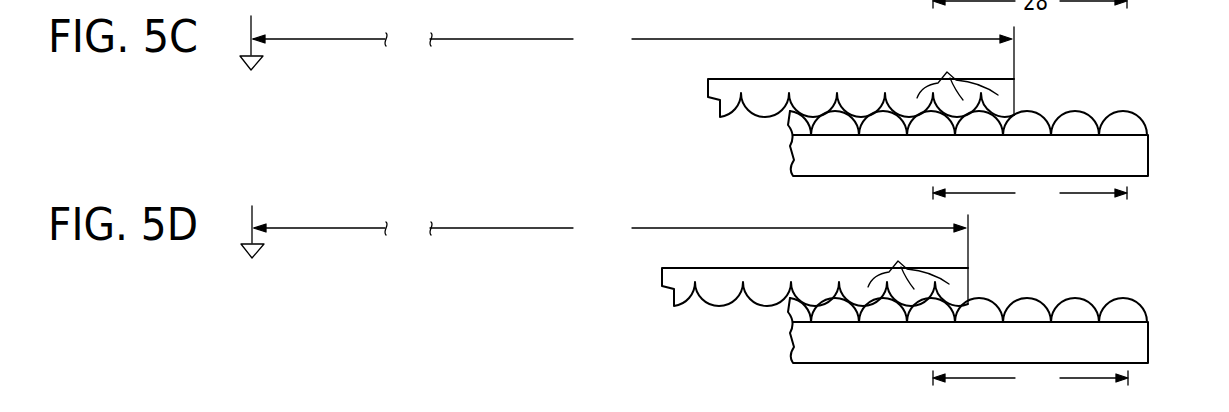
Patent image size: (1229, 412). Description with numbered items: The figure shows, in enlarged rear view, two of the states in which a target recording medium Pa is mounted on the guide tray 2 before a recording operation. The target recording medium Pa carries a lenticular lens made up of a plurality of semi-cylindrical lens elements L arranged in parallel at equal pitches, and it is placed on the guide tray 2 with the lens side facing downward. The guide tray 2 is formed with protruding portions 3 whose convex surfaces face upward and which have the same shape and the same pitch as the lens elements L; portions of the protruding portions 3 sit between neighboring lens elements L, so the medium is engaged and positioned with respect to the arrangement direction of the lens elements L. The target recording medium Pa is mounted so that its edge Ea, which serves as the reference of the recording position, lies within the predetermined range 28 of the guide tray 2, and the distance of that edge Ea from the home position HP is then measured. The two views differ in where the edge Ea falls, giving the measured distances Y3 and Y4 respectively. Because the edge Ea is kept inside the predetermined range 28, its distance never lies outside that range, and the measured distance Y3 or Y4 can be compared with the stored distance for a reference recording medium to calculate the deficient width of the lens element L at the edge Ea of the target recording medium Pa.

In FIG. 5C, the guide tray 2 is at (800, 157).
In FIG. 5D, the guide tray 2 is at (805, 344).
In FIG. 5C, the protruding portions 3 is at (1094, 128).
In FIG. 5D, the protruding portions 3 is at (1096, 317).
In FIG. 5C, the predetermined range 28 is at (1030, 192).
In FIG. 5D, the predetermined range 28 is at (1030, 379).
In FIG. 5C, the target recording medium Pa is at (722, 100).
In FIG. 5D, the target recording medium Pa is at (668, 288).
In FIG. 5C, the edge Ea is at (1015, 97).
In FIG. 5D, the edge Ea is at (970, 283).
In FIG. 5C, the lens element L is at (957, 71).
In FIG. 5D, the lens element L is at (908, 260).
In FIG. 5C, the home position HP is at (254, 35).
In FIG. 5D, the home position HP is at (253, 217).
In FIG. 5C, the measured distance Y3 is at (632, 40).
In FIG. 5D, the measured distance Y4 is at (610, 228).